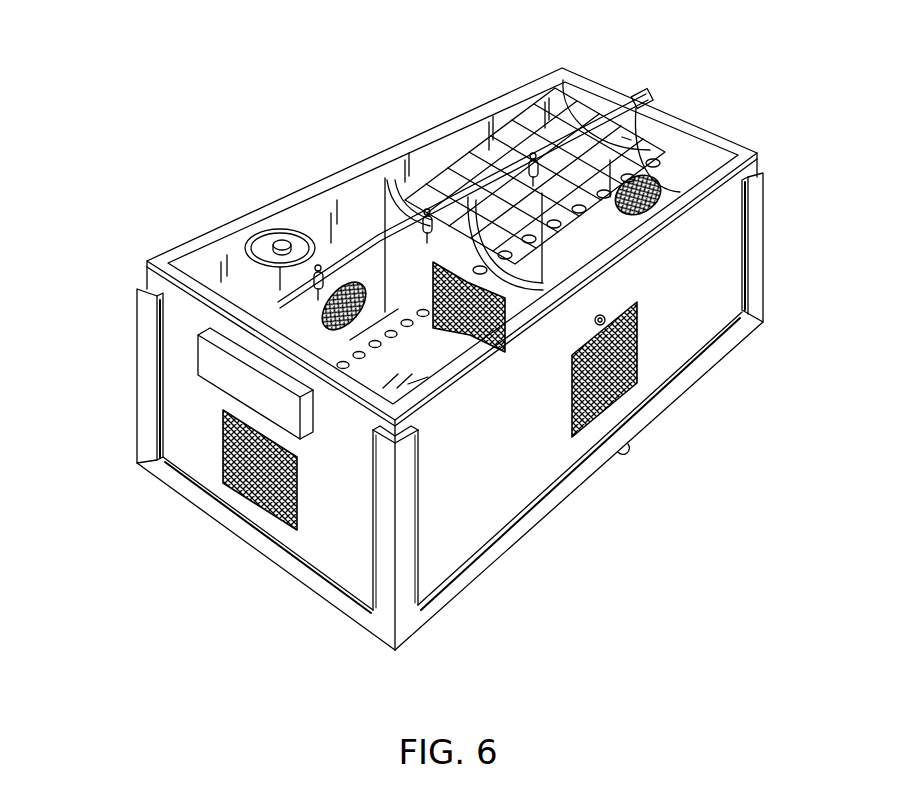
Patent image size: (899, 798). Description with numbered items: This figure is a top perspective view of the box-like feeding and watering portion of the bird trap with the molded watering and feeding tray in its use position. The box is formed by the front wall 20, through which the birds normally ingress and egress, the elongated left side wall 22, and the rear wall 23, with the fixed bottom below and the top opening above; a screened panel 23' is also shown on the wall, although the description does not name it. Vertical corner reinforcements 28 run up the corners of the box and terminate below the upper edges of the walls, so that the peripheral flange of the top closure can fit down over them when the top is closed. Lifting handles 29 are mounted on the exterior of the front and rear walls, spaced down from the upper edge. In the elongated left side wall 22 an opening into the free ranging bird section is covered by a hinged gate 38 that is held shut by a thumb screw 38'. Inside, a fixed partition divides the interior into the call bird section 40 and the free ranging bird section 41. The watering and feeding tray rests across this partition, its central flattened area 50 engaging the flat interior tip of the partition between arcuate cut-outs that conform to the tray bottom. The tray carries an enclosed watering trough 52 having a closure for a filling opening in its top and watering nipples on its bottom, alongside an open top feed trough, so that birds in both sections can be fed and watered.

The front wall 20 is at (685, 127).
The elongated left side wall 22 is at (517, 477).
The rear wall 23 is at (266, 553).
The side screen panel 23' is at (220, 490).
The corner reinforcements 28 is at (753, 237).
The lifting handles 29 is at (207, 375).
The hinged gate 38 is at (660, 369).
The thumb screw 38' is at (640, 398).
The call bird section 40 is at (498, 150).
The free ranging bird section 41 is at (410, 368).
The central flattened area 50 is at (265, 245).
The enclosed watering trough 52 is at (352, 197).